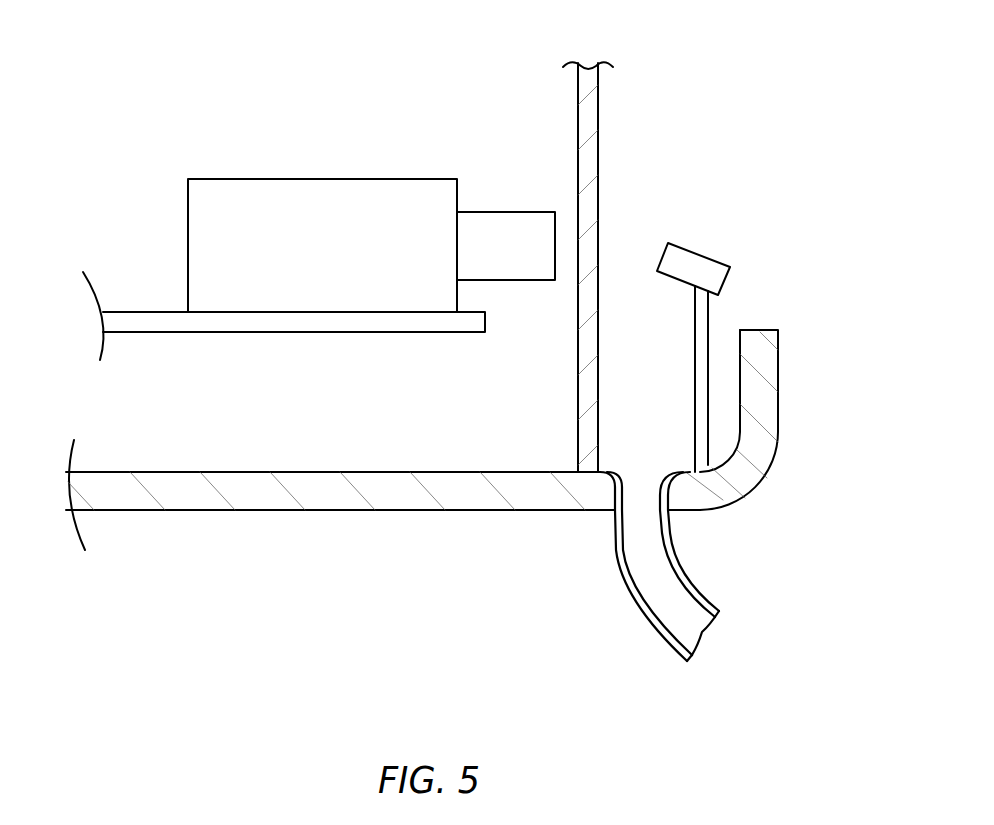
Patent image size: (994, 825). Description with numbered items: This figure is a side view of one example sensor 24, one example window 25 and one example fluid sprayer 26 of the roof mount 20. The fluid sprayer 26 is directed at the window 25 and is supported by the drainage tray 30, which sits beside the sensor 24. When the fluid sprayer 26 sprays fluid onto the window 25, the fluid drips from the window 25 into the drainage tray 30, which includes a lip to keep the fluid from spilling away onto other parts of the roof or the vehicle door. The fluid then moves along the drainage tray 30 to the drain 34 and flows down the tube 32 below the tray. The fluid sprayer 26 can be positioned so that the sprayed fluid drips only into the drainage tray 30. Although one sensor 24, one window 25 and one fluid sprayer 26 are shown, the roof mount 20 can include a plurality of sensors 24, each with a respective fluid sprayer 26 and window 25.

The roof mount 20 is at (740, 73).
The sensor 24 is at (212, 178).
The window 25 is at (598, 164).
The fluid sprayer 26 is at (707, 258).
The drainage tray 30 is at (763, 330).
The tube 32 is at (622, 582).
The drain 34 is at (651, 456).